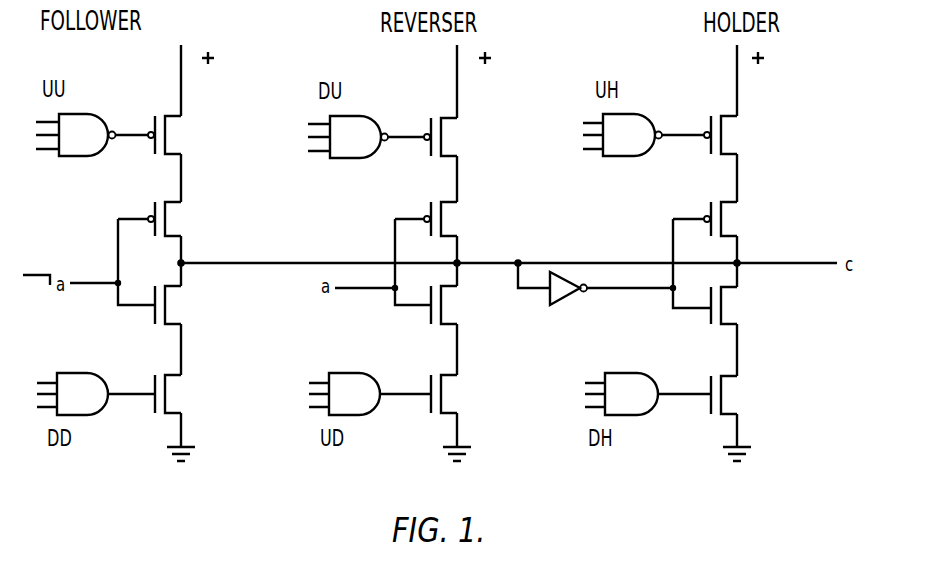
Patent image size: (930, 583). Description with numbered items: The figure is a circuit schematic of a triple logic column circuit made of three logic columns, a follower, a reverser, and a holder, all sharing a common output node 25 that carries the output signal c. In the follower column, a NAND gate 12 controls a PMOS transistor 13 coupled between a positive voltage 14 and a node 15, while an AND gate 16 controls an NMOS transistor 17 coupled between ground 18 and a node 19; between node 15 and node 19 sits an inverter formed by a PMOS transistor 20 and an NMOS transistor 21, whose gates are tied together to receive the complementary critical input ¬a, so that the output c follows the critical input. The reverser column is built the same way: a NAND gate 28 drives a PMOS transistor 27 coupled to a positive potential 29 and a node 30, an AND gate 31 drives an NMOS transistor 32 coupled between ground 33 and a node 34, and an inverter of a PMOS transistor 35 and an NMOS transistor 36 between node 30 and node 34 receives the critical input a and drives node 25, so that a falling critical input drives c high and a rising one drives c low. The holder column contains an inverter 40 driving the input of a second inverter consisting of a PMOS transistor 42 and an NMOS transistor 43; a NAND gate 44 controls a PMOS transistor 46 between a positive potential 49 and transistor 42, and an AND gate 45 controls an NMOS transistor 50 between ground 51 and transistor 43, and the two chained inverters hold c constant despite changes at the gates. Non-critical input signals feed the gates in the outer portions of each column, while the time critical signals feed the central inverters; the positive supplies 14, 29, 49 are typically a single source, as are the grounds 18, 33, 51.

The NAND gate 12 is at (84, 157).
The PMOS transistor 13 is at (178, 133).
The positive voltage 14 is at (182, 68).
The node 15 is at (181, 179).
The AND gate 16 is at (78, 372).
The NMOS transistor 17 is at (176, 391).
The ground 18 is at (190, 461).
The node 19 is at (181, 345).
The PMOS transistor 20 is at (176, 222).
The NMOS transistor 21 is at (177, 307).
The output node 25 is at (184, 267).
The PMOS transistor 27 is at (452, 136).
The NAND gate 28 is at (338, 159).
The positive potential 29 is at (455, 53).
The node 30 is at (457, 180).
The AND gate 31 is at (355, 373).
The NMOS transistor 32 is at (452, 394).
The ground 33 is at (466, 461).
The node 34 is at (458, 346).
The PMOS transistor 35 is at (454, 223).
The NMOS transistor 36 is at (455, 308).
The inverter 40 is at (567, 293).
The PMOS transistor 42 is at (728, 228).
The NMOS transistor 43 is at (733, 307).
The NAND gate 44 is at (618, 157).
The AND gate 45 is at (640, 373).
The PMOS transistor 46 is at (733, 138).
The positive potential 49 is at (735, 53).
The NMOS transistor 50 is at (733, 394).
The ground 51 is at (748, 461).